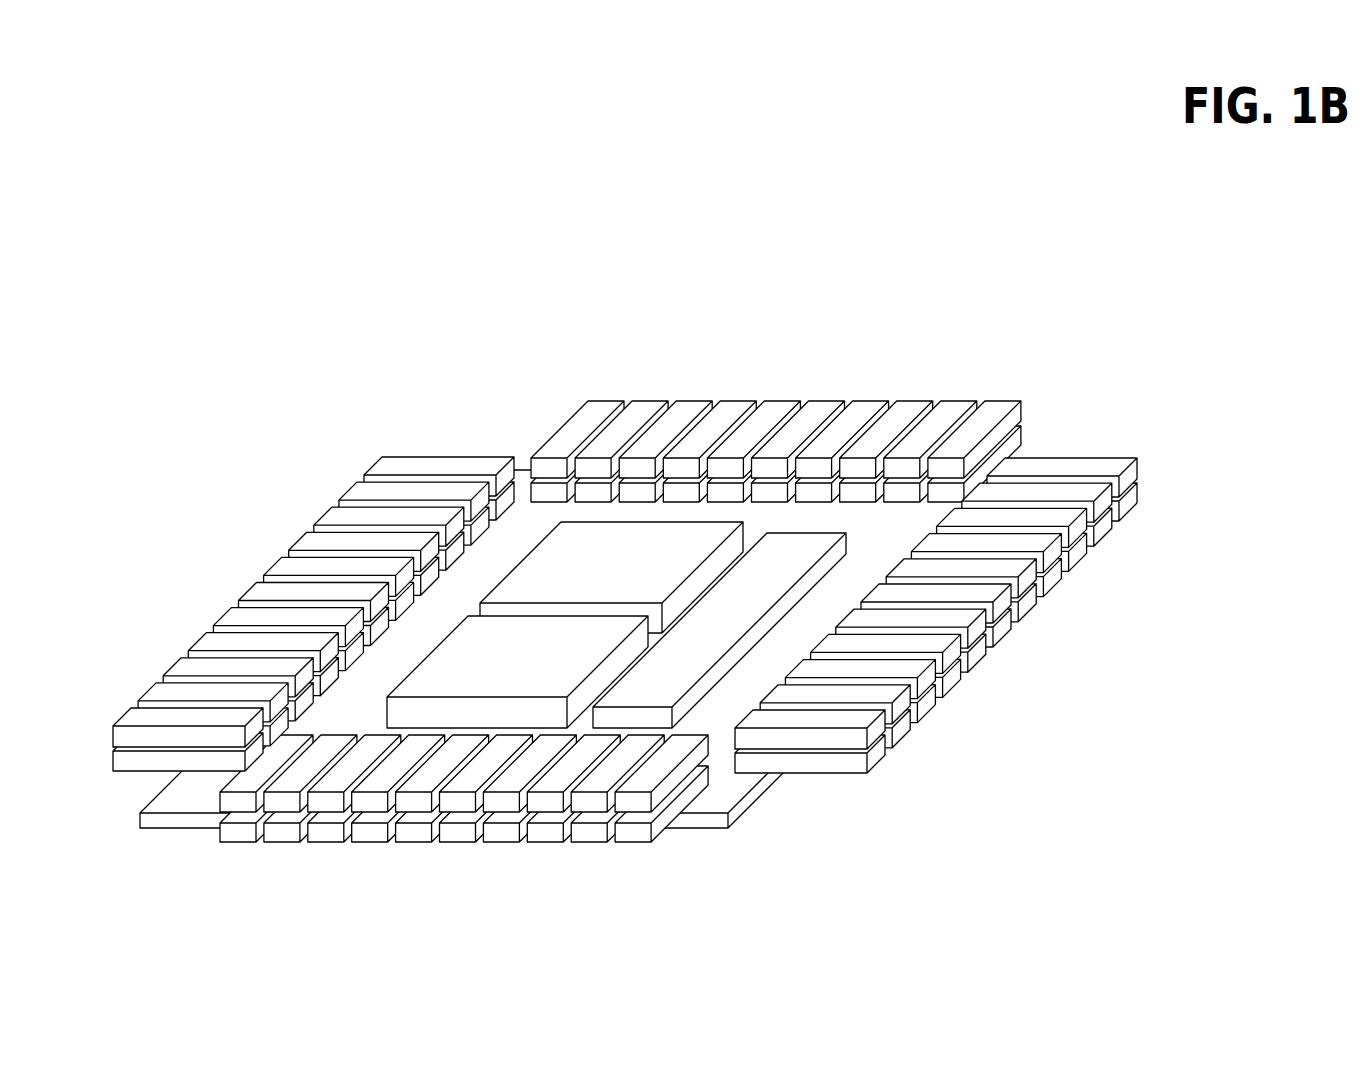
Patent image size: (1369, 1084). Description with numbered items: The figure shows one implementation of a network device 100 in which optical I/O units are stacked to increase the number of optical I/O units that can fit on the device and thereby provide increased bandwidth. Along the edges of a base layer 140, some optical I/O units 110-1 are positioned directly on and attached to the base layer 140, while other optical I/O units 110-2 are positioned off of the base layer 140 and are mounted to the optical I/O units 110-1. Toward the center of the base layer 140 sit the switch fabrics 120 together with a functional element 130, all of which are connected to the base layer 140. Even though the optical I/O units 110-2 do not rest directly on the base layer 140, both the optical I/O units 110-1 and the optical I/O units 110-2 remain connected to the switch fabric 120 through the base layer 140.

The network device 100 is at (280, 262).
The optical I/O units 110-1 is at (808, 365).
The optical I/O units 110-2 is at (1163, 471).
The switch fabric 120 is at (637, 553).
The functional element 130 is at (715, 648).
The base layer 140 is at (743, 803).